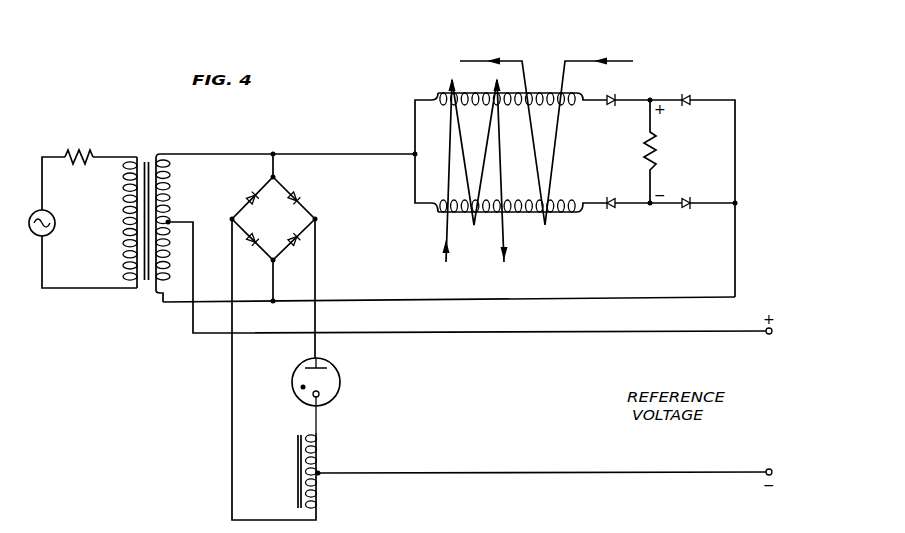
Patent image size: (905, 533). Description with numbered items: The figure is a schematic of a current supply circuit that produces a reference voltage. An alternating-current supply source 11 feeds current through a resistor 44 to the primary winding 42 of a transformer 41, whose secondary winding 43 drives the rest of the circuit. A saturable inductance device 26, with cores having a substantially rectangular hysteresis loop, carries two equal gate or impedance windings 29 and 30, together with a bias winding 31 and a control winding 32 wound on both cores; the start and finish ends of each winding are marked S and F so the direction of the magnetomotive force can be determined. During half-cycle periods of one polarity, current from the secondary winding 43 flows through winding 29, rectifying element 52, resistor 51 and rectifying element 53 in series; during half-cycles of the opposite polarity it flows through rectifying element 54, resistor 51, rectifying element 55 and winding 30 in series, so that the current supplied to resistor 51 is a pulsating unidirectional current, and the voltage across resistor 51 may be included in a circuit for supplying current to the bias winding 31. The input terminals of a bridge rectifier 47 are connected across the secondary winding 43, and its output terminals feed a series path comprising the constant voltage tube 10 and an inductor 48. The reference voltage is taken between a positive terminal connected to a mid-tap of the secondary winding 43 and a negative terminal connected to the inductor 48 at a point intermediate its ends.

The constant voltage tube 10 is at (342, 388).
The alternating-current supply source 11 is at (33, 238).
The saturable inductance device 26 is at (432, 82).
The gate winding 29 is at (581, 92).
The gate winding 30 is at (562, 213).
The bias winding 31 is at (500, 143).
The control winding 32 is at (555, 152).
The transformer 41 is at (145, 157).
The primary winding 42 is at (123, 220).
The secondary winding 43 is at (172, 201).
The resistor 44 is at (71, 153).
The bridge rectifier 47 is at (274, 227).
The inductor 48 is at (322, 492).
The resistor 51 is at (658, 146).
The rectifying element 52 is at (613, 95).
The rectifying element 53 is at (687, 212).
The rectifying element 54 is at (687, 93).
The rectifying element 55 is at (610, 212).